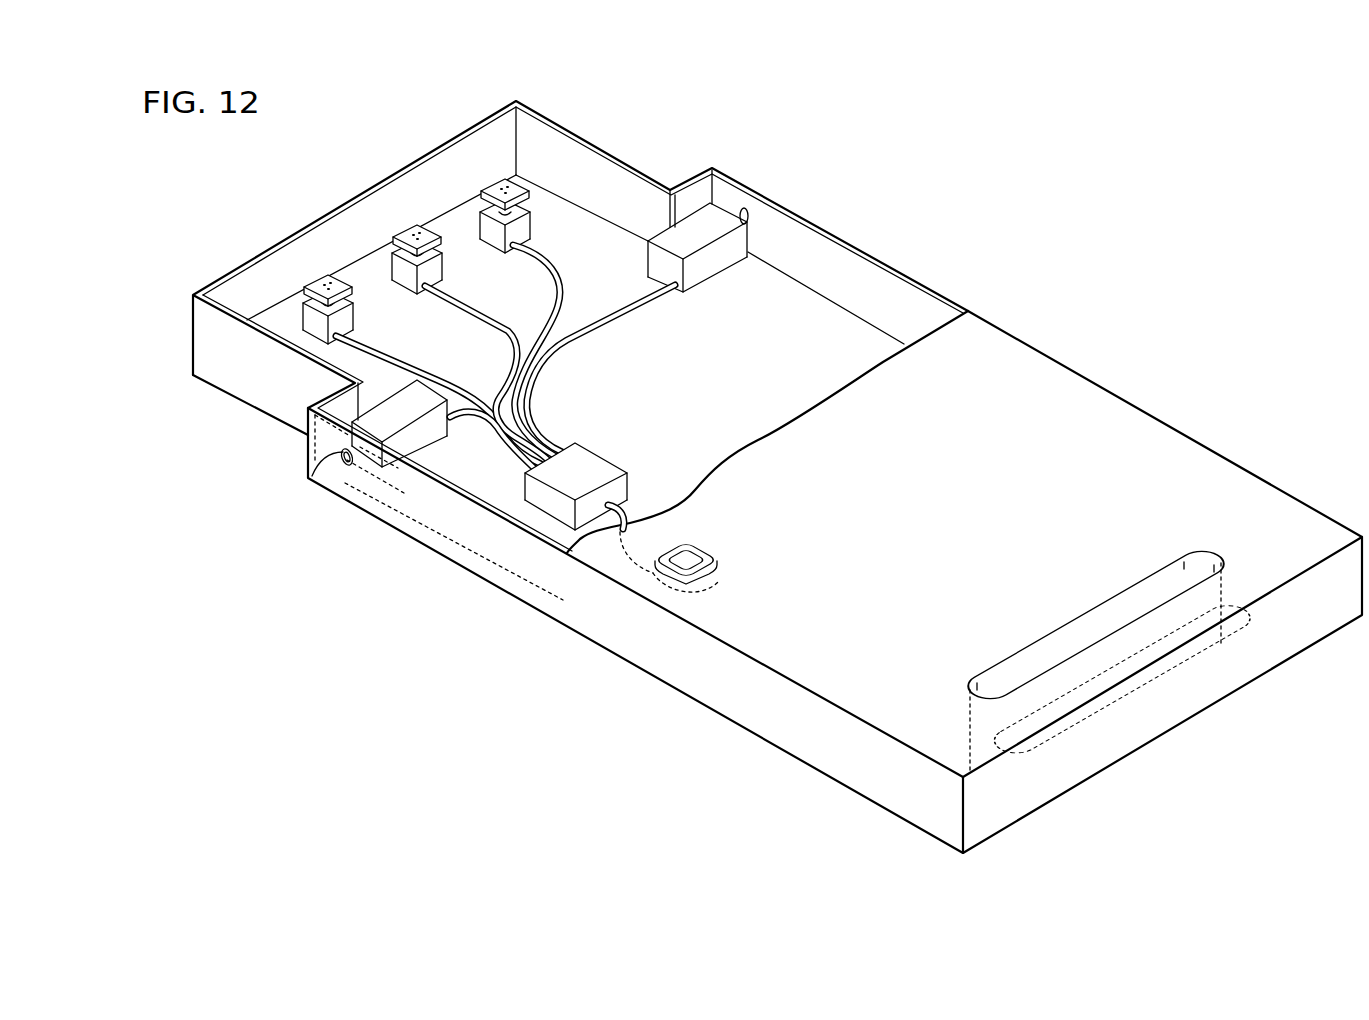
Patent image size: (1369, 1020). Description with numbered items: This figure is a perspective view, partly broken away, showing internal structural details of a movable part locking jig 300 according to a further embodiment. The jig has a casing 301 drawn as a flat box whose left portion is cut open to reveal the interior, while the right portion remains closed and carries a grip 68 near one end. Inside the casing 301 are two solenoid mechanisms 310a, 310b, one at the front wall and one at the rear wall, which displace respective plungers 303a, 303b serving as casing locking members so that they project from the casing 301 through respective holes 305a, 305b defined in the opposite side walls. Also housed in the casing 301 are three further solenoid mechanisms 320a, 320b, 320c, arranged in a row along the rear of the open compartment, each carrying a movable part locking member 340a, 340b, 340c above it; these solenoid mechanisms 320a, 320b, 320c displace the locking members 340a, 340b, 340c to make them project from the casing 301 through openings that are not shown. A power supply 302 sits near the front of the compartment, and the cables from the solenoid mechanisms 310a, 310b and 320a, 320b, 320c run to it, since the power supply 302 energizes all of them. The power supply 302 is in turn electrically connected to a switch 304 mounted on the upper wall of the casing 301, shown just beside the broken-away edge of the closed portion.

The movable part locking jig 300 is at (1012, 215).
The casing 301 is at (777, 477).
The power supply 302 is at (592, 470).
The plunger 303a is at (333, 472).
The plunger 303b is at (746, 205).
The switch 304 is at (688, 557).
The hole 305a is at (305, 479).
The hole 305b is at (752, 223).
The solenoid mechanism 310a is at (437, 440).
The solenoid mechanism 310b is at (703, 272).
The solenoid mechanism 320a is at (352, 319).
The solenoid mechanism 320b is at (441, 268).
The solenoid mechanism 320c is at (529, 216).
The movable part locking member 340a is at (313, 290).
The movable part locking member 340b is at (402, 237).
The movable part locking member 340c is at (492, 183).
The grip 68 is at (1097, 633).